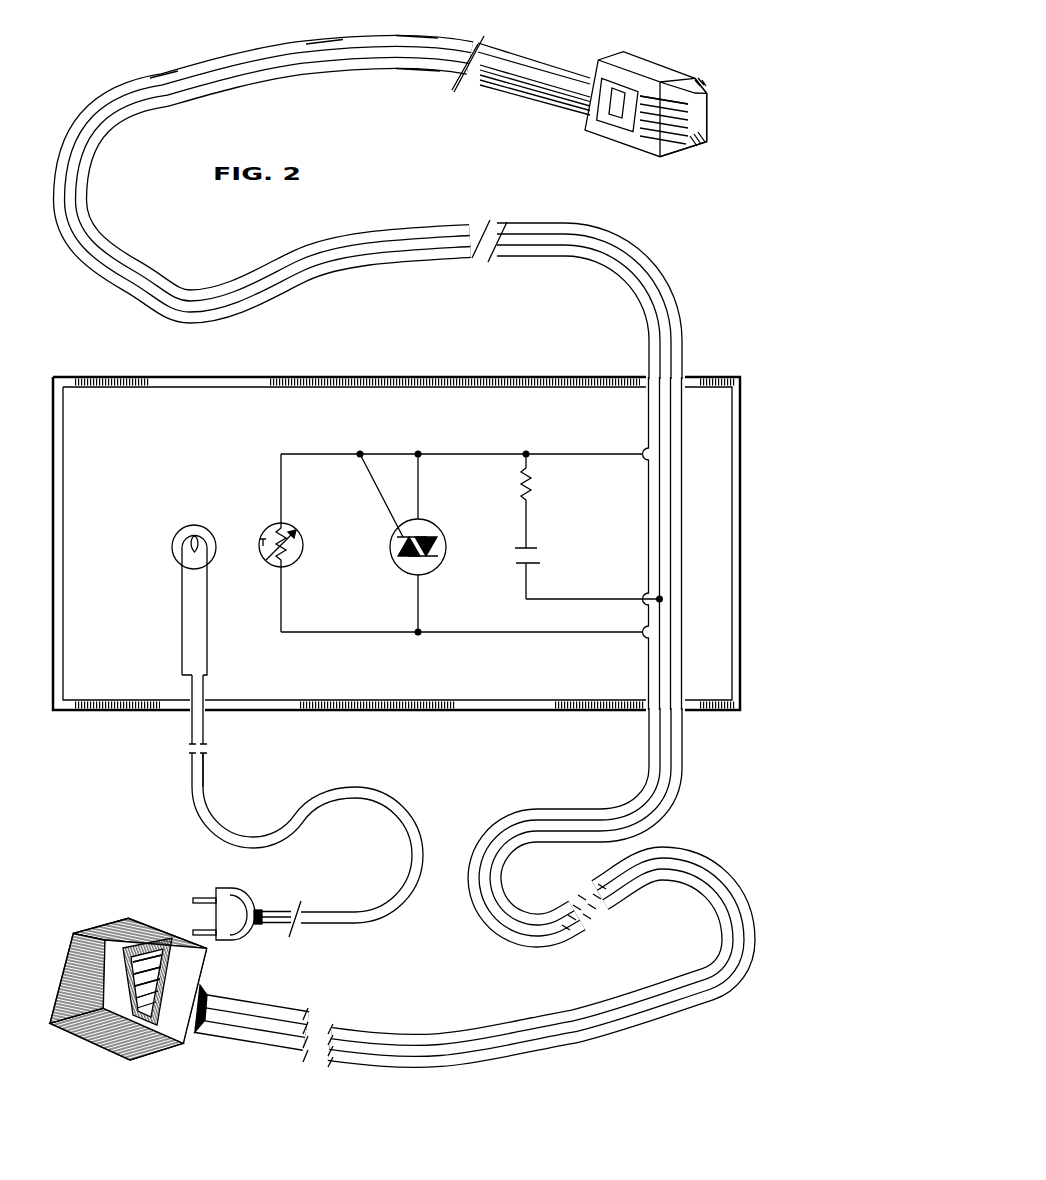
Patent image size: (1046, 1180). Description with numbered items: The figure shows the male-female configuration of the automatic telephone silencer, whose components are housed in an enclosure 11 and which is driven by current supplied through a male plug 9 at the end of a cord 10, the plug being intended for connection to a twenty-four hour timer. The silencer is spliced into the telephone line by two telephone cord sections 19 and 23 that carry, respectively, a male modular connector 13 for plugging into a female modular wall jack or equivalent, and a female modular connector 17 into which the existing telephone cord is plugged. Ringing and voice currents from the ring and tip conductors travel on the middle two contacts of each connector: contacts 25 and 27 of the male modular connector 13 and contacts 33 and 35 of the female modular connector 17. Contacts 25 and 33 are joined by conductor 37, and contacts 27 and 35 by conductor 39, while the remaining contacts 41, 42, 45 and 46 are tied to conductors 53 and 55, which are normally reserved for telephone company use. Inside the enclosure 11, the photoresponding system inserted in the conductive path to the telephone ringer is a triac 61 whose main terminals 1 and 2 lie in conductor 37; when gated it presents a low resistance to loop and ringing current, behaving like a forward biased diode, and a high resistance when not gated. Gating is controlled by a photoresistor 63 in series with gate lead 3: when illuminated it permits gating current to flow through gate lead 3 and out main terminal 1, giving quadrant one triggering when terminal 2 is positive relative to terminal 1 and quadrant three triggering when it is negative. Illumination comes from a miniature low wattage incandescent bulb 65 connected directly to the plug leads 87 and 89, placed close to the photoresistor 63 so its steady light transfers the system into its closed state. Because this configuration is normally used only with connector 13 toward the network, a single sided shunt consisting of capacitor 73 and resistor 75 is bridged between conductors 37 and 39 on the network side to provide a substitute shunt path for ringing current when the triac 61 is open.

The main terminal 1 is at (421, 504).
The main terminal 2 is at (421, 605).
The gate lead 3 is at (372, 486).
The male plug 9 is at (220, 888).
The cord 10 is at (276, 905).
The enclosure 11 is at (483, 713).
The male modular connector 13 is at (611, 150).
The female modular connector 17 is at (95, 916).
The telephone cord section 19 is at (530, 56).
The telephone cord section 23 is at (254, 995).
The contact 25 is at (704, 100).
The contact 27 is at (702, 132).
The contact 33 is at (165, 980).
The contact 35 is at (160, 1000).
The conductor 37 is at (320, 40).
The conductor 39 is at (164, 79).
The contact 41 is at (652, 88).
The contact 42 is at (682, 150).
The contact 45 is at (172, 957).
The contact 46 is at (150, 1015).
The conductor 53 is at (408, 40).
The conductor 55 is at (413, 70).
The triac 61 is at (443, 530).
The photoresistor 63 is at (300, 565).
The incandescent bulb 65 is at (206, 530).
The capacitor 73 is at (533, 548).
The resistor 75 is at (533, 485).
The lead 87 is at (186, 778).
The lead 89 is at (205, 770).